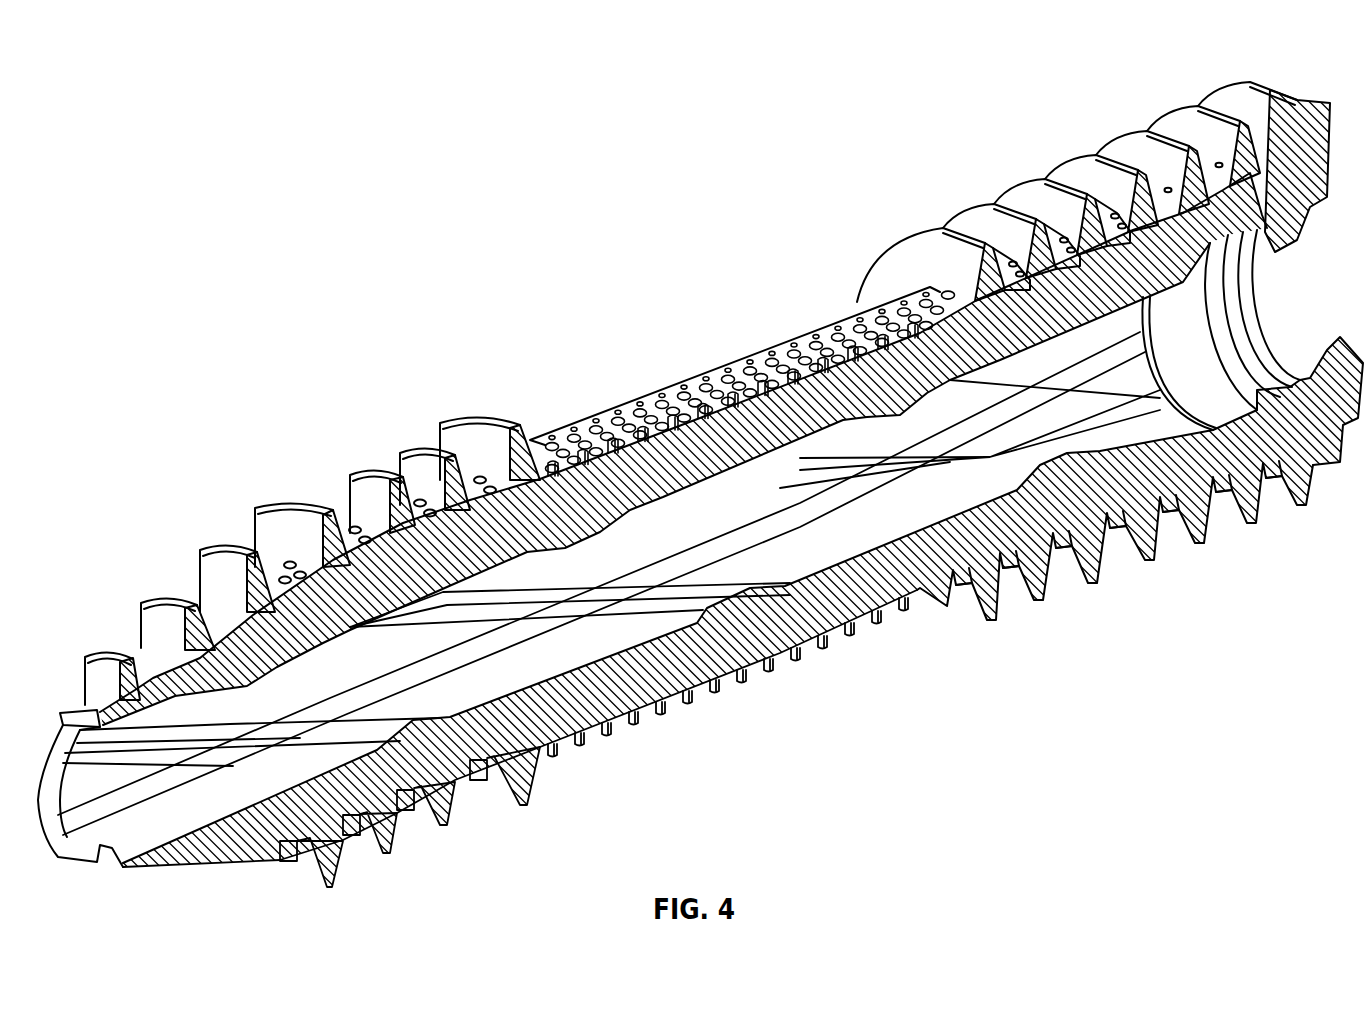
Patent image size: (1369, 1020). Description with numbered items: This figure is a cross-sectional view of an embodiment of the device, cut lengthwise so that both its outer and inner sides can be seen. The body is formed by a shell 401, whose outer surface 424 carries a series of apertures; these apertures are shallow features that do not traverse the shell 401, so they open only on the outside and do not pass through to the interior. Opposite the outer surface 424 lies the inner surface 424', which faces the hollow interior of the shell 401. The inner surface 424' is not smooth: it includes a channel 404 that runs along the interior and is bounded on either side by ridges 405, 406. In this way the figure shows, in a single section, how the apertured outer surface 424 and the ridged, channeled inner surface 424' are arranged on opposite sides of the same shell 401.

The shell 401 is at (618, 482).
The channel 404 is at (667, 570).
The ridge 405 is at (850, 478).
The ridge 406 is at (470, 612).
The outer surface 424 is at (750, 367).
The inner surface 424' is at (738, 385).